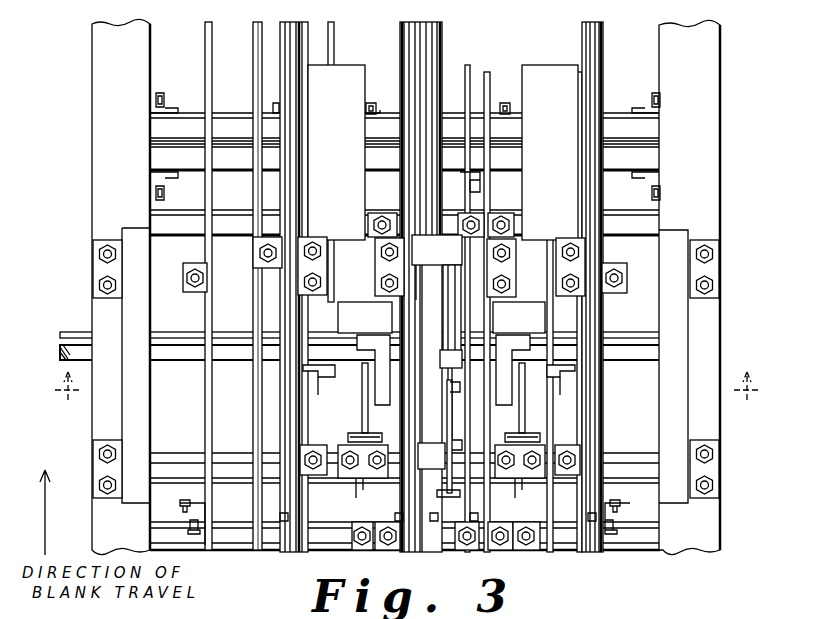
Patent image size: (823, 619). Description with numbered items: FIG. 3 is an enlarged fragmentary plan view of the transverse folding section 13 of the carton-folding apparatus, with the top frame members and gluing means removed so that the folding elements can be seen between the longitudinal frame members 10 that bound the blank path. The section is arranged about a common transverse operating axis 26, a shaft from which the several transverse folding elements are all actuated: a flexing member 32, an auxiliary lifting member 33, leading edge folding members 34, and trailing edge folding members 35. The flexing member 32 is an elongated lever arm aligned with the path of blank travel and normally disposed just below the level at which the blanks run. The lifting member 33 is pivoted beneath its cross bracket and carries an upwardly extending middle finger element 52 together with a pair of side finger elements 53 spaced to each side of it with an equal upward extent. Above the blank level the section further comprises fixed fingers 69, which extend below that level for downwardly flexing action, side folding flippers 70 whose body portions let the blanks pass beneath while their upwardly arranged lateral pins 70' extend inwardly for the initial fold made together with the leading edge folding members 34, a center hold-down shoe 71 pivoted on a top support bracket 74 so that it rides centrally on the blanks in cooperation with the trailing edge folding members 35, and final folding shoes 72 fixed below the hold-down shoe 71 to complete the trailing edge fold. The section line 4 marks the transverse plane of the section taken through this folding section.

The frame side member 10 is at (700, 170).
The transverse folding section 13 is at (88, 150).
The common transverse operating axis 26 is at (70, 333).
The flexing member 32 is at (452, 420).
The auxiliary lifting member 33 is at (443, 460).
The leading edge folding members 34 is at (362, 396).
The trailing edge folding members 35 is at (350, 320).
The middle finger element 52 is at (452, 500).
The side finger elements 53 is at (370, 540).
The fixed fingers 69 is at (358, 486).
The side folding flippers 70 is at (444, 377).
The lateral pins 70' is at (438, 393).
The center hold-down shoe 71 is at (452, 346).
The final folding shoes 72 is at (380, 268).
The top support bracket 74 is at (441, 378).
The section line 4- 4 is at (407, 398).